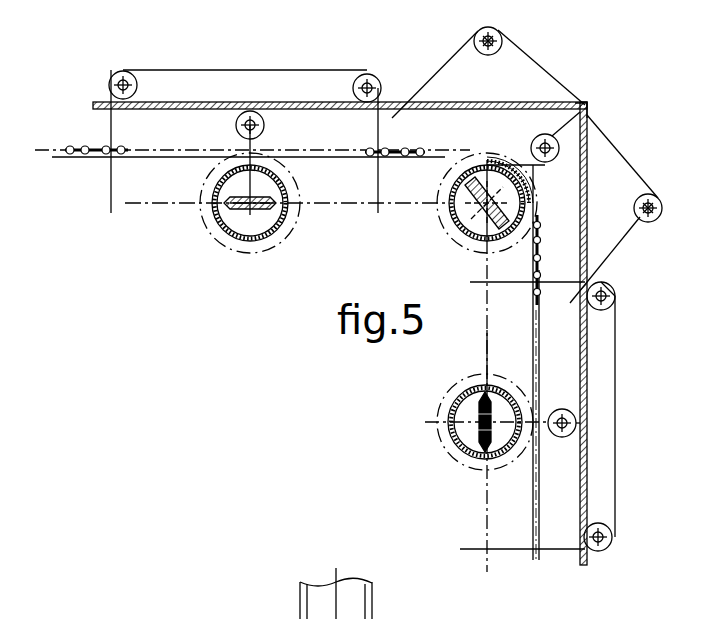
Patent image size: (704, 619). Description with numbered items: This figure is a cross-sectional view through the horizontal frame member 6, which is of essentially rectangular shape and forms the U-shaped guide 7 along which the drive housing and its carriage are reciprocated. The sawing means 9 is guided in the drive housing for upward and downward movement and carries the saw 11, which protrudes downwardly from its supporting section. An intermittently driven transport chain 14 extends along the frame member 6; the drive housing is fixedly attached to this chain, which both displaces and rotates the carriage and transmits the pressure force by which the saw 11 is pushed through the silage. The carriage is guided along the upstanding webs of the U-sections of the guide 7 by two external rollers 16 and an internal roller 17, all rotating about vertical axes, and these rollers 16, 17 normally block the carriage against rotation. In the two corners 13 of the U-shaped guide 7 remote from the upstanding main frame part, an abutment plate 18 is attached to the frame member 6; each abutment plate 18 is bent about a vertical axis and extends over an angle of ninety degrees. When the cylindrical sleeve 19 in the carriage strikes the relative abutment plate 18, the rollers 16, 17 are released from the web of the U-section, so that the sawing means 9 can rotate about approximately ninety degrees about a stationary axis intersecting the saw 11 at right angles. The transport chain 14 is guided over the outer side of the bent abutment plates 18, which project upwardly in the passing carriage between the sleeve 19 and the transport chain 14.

The frame member 6 is at (555, 568).
The U-shaped guide 7 is at (392, 103).
The sawing means 9 is at (303, 596).
The saw 11 is at (263, 205).
The corners 13 is at (587, 106).
The transport chain 14 is at (411, 158).
The external rollers 16 is at (122, 72).
The internal roller 17 is at (253, 112).
The abutment plate 18 is at (528, 192).
The cylindrical sleeve 19 is at (452, 440).